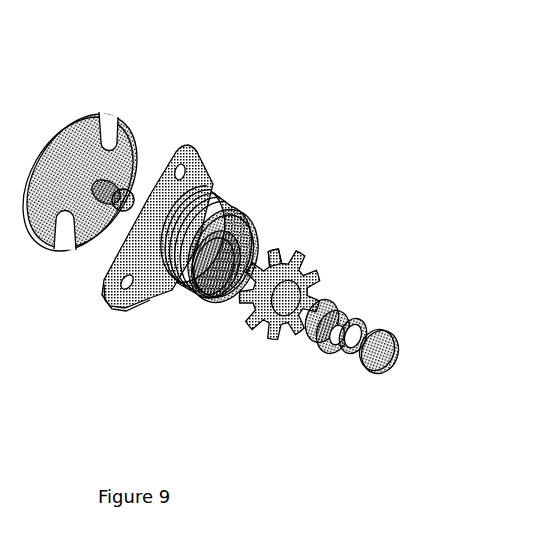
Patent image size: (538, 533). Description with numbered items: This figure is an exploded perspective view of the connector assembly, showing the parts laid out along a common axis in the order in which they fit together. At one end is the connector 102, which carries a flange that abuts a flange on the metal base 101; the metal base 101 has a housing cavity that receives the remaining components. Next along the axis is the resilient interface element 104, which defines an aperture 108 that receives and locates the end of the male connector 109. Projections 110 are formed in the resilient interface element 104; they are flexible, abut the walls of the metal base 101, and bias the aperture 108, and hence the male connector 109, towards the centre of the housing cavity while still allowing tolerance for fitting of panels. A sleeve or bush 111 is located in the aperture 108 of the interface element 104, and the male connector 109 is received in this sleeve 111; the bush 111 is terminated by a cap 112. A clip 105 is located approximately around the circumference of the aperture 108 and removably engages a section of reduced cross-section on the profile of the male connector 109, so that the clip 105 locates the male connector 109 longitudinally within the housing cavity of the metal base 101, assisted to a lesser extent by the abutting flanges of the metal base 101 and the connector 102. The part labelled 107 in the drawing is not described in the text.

The metal base 101 is at (238, 204).
The connector 102 is at (127, 143).
The resilient interface element 104 is at (302, 262).
The clip 105 is at (365, 323).
The mounting flange 107 is at (213, 184).
The aperture 108 is at (218, 270).
The male connector 109 is at (117, 218).
The projections 110 is at (278, 248).
The sleeve or bush 111 is at (342, 302).
The cap 112 is at (403, 340).